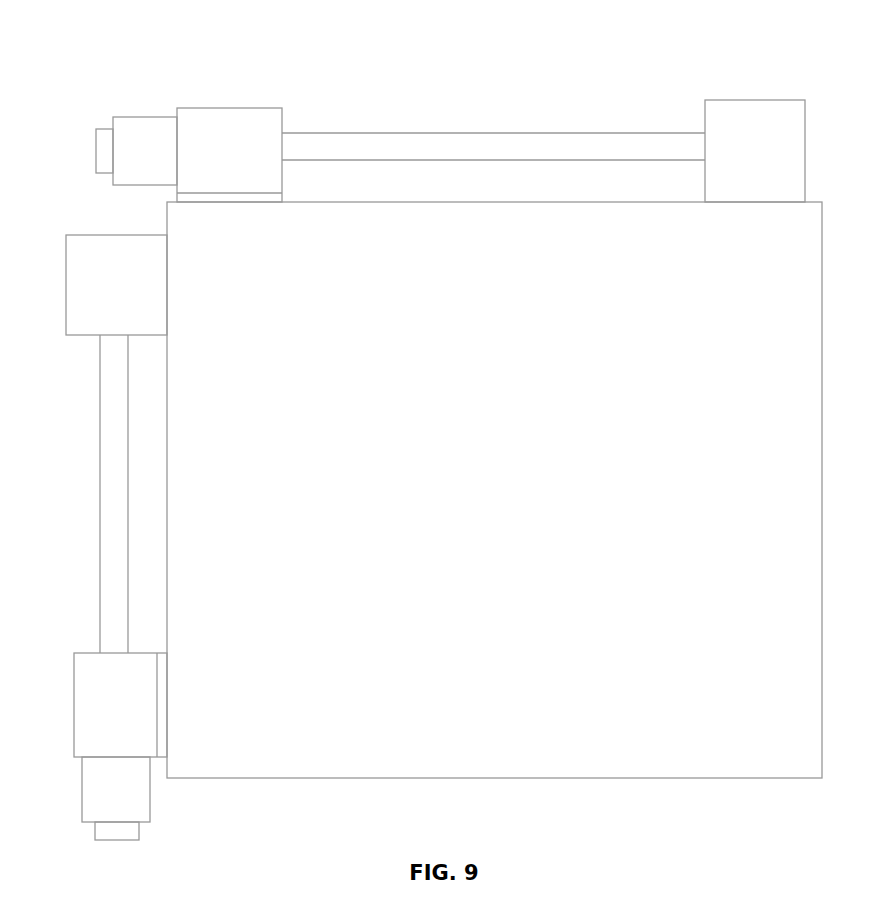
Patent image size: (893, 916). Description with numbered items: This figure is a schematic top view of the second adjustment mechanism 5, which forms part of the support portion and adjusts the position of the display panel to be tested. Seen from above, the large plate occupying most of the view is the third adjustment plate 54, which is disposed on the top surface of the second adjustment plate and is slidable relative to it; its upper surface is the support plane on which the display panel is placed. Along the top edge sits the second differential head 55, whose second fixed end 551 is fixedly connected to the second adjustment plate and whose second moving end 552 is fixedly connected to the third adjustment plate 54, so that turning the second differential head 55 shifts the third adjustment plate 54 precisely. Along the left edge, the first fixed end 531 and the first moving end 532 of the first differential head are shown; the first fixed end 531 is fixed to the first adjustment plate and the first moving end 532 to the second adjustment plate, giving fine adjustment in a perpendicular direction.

The second adjustment mechanism 5 is at (452, 74).
The third adjustment plate 54 is at (802, 490).
The second differential head 55 is at (144, 128).
The second fixed end 551 is at (238, 118).
The second moving end 552 is at (743, 118).
The first fixed end 531 is at (106, 701).
The first moving end 532 is at (102, 278).